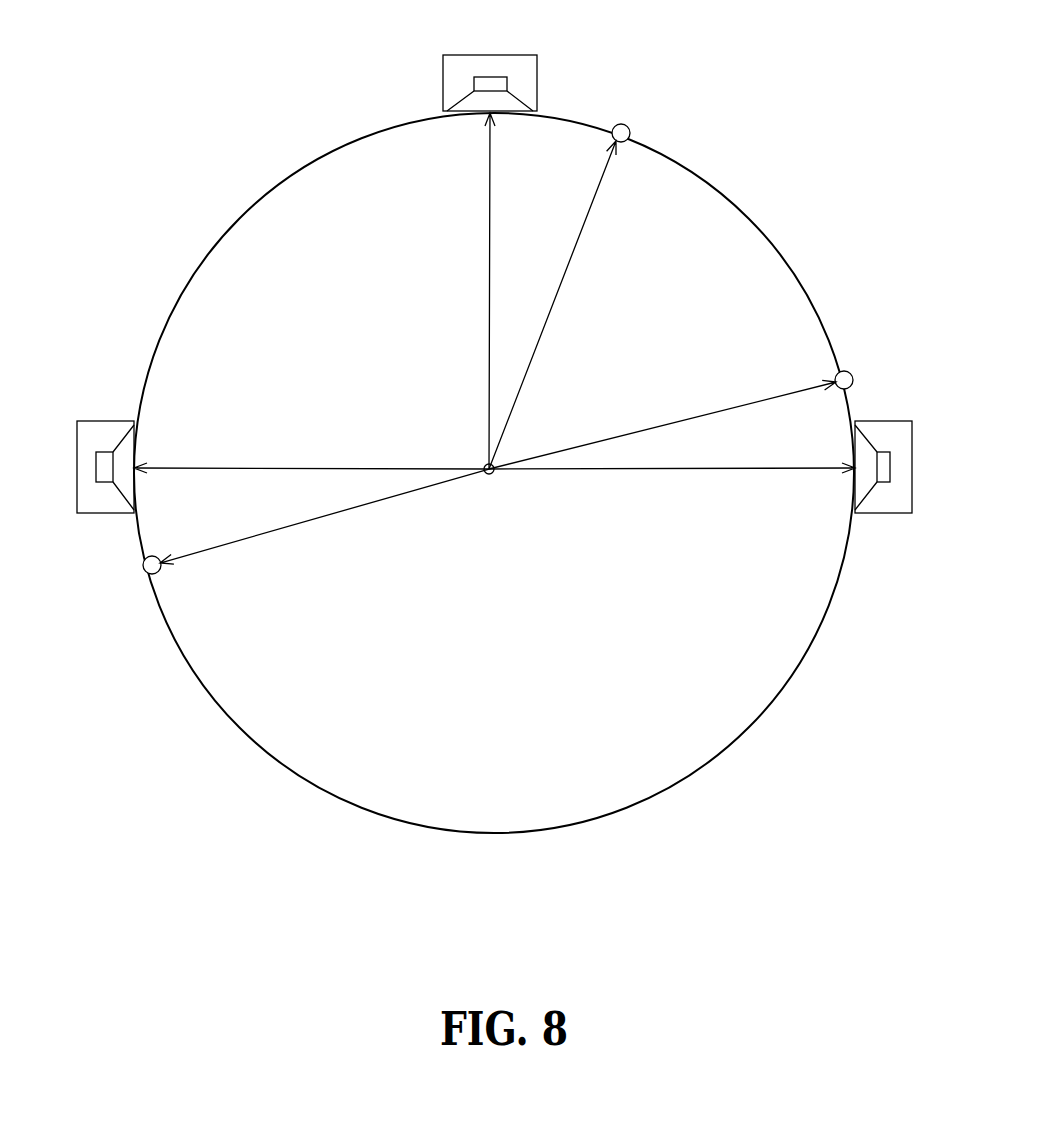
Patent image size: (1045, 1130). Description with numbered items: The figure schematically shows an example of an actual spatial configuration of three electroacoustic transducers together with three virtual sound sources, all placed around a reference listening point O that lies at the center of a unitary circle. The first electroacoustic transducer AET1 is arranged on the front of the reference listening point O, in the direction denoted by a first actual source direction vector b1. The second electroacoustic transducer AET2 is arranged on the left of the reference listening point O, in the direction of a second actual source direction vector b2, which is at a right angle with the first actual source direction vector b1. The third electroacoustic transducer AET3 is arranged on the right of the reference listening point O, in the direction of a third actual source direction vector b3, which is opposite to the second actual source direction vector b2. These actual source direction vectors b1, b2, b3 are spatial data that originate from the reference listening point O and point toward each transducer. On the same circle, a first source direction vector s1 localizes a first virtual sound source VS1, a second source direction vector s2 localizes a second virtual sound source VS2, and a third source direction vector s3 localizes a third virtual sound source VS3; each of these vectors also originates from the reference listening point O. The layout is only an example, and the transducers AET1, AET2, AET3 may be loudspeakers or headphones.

The first electroacoustic transducer AET1 is at (494, 58).
The second electroacoustic transducer AET2 is at (82, 439).
The third electroacoustic transducer AET3 is at (899, 497).
The first virtual sound source VS1 is at (646, 108).
The second virtual sound source VS2 is at (876, 362).
The third virtual sound source VS3 is at (114, 584).
The reference listening point O is at (506, 488).
The first actual source direction vector b1 is at (466, 207).
The second actual source direction vector b2 is at (296, 409).
The third actual source direction vector b3 is at (744, 487).
The first source direction vector s1 is at (644, 199).
The second source direction vector s2 is at (701, 367).
The third source direction vector s3 is at (294, 562).